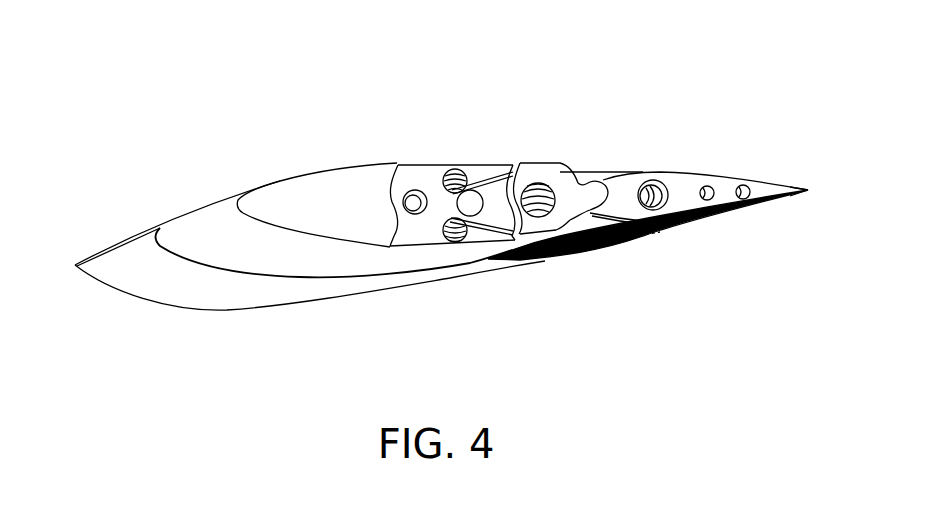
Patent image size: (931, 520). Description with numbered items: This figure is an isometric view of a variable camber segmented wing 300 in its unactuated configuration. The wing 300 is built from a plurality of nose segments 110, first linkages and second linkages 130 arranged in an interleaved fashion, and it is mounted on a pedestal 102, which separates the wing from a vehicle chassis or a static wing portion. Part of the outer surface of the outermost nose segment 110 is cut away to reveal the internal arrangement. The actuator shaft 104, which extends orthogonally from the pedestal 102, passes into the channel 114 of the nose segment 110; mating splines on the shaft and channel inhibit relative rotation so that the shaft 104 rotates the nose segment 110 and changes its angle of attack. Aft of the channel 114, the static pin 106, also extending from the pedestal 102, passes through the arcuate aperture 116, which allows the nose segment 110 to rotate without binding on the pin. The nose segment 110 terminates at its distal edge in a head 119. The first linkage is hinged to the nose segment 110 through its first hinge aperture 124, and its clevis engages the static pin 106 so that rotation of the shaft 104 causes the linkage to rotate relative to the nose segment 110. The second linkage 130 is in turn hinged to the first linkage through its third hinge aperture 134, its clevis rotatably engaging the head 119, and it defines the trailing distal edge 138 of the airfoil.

The wing 300 is at (722, 80).
The pedestal 102 is at (98, 248).
The nose segment 110 is at (303, 172).
The actuator shaft 104 is at (410, 200).
The channel 114 is at (419, 215).
The static pin 106 is at (469, 200).
The arcuate aperture 116 is at (477, 218).
The head 119 is at (596, 184).
The first hinge aperture 124 is at (548, 240).
The third hinge aperture 134 is at (653, 184).
The second linkage 130 is at (725, 186).
The trailing distal edge 138 is at (808, 186).